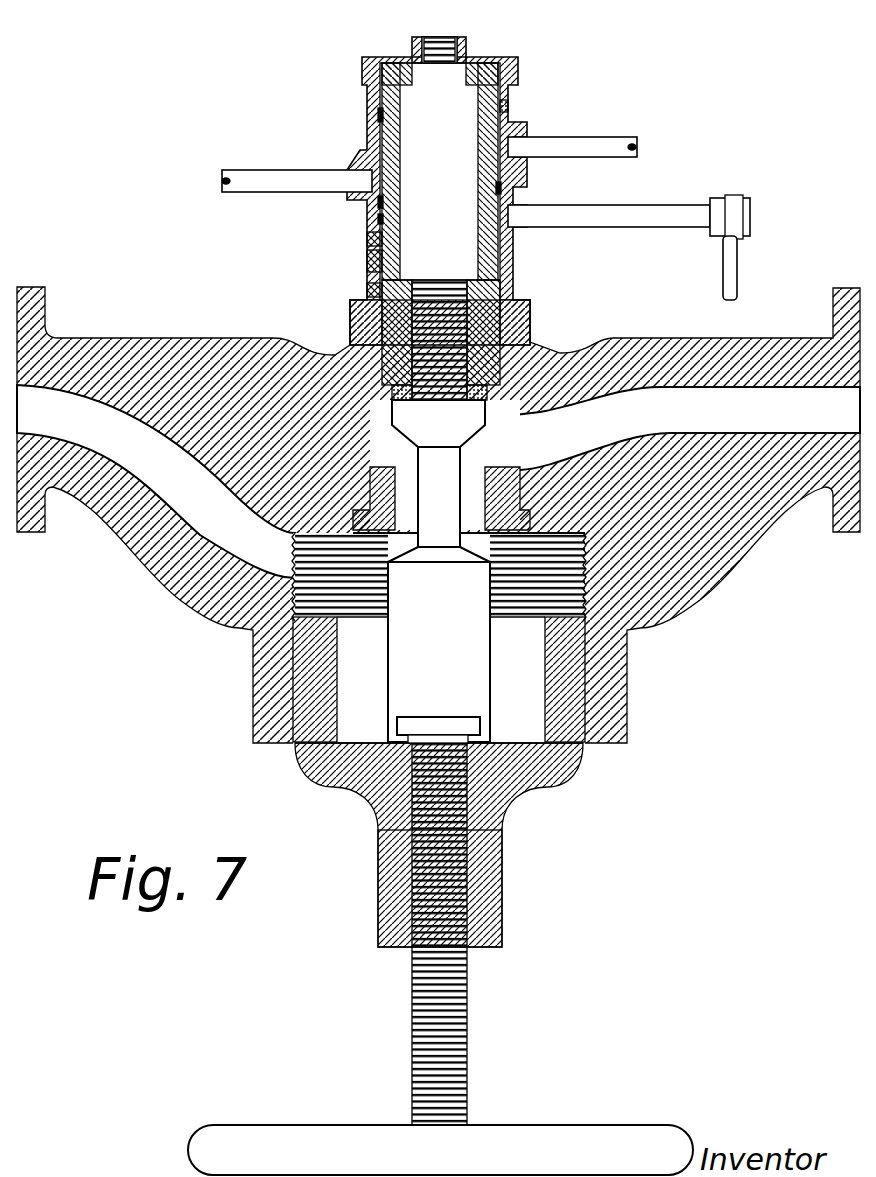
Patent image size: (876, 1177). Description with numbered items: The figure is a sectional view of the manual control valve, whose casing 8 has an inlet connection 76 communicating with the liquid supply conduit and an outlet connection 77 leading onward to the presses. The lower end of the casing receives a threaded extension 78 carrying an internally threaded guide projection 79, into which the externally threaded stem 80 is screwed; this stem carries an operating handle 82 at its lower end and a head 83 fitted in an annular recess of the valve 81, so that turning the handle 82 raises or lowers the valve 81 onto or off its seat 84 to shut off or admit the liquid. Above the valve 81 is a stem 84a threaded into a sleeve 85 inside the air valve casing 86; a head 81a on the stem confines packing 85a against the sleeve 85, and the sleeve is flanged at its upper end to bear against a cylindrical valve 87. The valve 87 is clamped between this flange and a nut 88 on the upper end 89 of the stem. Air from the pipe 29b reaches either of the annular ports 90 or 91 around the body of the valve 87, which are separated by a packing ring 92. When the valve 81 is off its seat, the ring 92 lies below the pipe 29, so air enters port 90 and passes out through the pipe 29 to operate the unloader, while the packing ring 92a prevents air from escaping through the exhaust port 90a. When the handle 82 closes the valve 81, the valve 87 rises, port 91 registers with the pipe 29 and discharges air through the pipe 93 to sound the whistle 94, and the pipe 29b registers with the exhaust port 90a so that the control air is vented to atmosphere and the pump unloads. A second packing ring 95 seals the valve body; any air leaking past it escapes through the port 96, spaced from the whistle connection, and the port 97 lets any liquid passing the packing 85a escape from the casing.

The casing 8 is at (612, 664).
The inlet connection 76 is at (156, 481).
The outlet connection 77 is at (687, 428).
The extension 78 is at (612, 768).
The guide projection 79 is at (500, 838).
The stem 80 is at (470, 978).
The valve 81 is at (439, 652).
The head 81a is at (495, 413).
The operating handle 82 is at (580, 1130).
The head 83 is at (432, 722).
The seat 84 is at (420, 545).
The stem 84a is at (455, 348).
The sleeve 85 is at (500, 312).
The packing 85a is at (500, 392).
The air valve casing 86 is at (520, 272).
The cylindrical valve 87 is at (520, 250).
The nut 88 is at (470, 48).
The upper end of stem 89 is at (442, 40).
The annular port 90 is at (368, 150).
The exhaust port 90a is at (510, 108).
The annular port 91 is at (378, 222).
The packing ring 92 is at (378, 205).
The packing ring 92a is at (380, 115).
The pipe 93 is at (636, 218).
The whistle 94 is at (738, 255).
The packing ring 95 is at (373, 258).
The port 96 is at (370, 240).
The port 97 is at (378, 290).
The pipe 29 is at (297, 165).
The pipe 29b is at (640, 147).